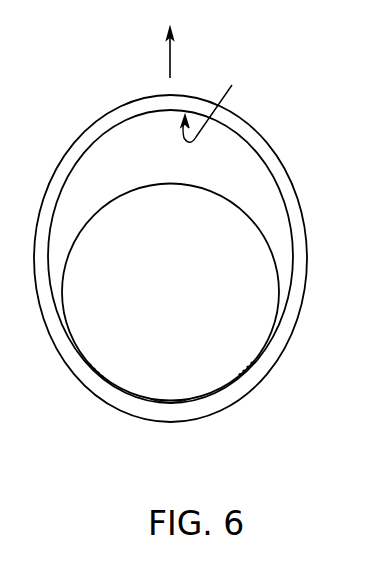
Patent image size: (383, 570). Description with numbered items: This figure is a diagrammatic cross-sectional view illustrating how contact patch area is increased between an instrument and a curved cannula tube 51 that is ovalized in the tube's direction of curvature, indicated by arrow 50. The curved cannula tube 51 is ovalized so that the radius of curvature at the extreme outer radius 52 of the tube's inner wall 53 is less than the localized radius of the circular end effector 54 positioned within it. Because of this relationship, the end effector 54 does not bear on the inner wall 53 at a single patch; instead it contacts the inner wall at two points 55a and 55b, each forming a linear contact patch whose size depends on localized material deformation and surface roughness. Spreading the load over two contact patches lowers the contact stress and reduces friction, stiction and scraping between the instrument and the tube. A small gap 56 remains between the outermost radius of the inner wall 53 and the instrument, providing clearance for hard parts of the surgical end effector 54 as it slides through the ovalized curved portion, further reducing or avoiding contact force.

The arrow 50 is at (172, 50).
The curved cannula tube 51 is at (238, 127).
The extreme outer radius 52 is at (176, 409).
The inner wall 53 is at (217, 102).
The end effector 54 is at (193, 217).
The contact point 55a is at (95, 377).
The contact point 55b is at (254, 373).
The gap 56 is at (163, 408).